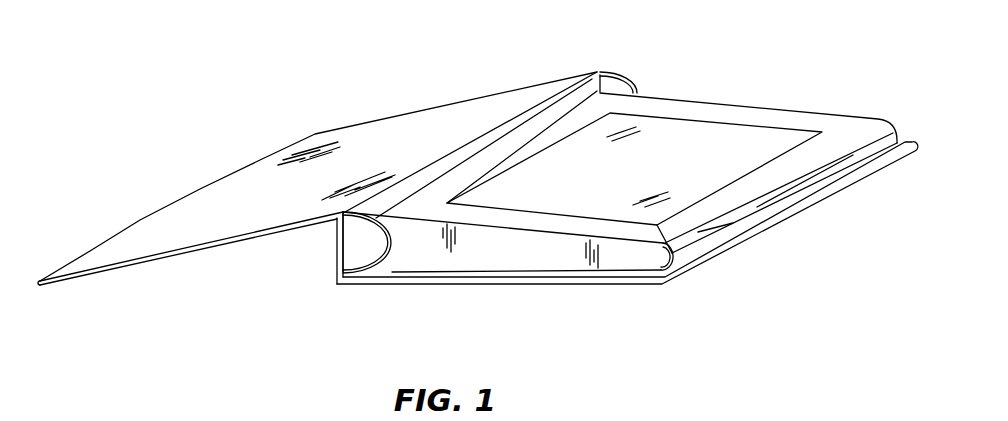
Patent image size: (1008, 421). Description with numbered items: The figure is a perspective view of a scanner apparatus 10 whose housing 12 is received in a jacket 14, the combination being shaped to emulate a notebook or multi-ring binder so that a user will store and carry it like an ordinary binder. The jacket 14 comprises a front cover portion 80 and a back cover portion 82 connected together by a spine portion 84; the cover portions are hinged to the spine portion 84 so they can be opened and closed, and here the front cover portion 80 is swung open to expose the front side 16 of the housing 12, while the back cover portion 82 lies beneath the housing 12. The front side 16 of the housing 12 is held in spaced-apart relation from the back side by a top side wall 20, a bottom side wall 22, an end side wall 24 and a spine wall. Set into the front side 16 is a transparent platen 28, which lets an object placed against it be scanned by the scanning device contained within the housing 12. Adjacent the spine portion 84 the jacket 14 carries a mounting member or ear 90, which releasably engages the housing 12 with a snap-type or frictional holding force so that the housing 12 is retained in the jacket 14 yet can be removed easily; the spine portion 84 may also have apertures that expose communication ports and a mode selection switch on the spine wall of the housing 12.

The scanner apparatus 10 is at (211, 72).
The housing 12 is at (859, 110).
The jacket 14 is at (138, 218).
The front side 16 is at (670, 112).
The top side wall 20 is at (722, 105).
The bottom side wall 22 is at (463, 271).
The end side wall 24 is at (778, 210).
The transparent platen 28 is at (677, 212).
The front cover portion 80 is at (450, 103).
The back cover portion 82 is at (566, 287).
The spine portion 84 is at (337, 257).
The second mounting member 90 is at (388, 256).